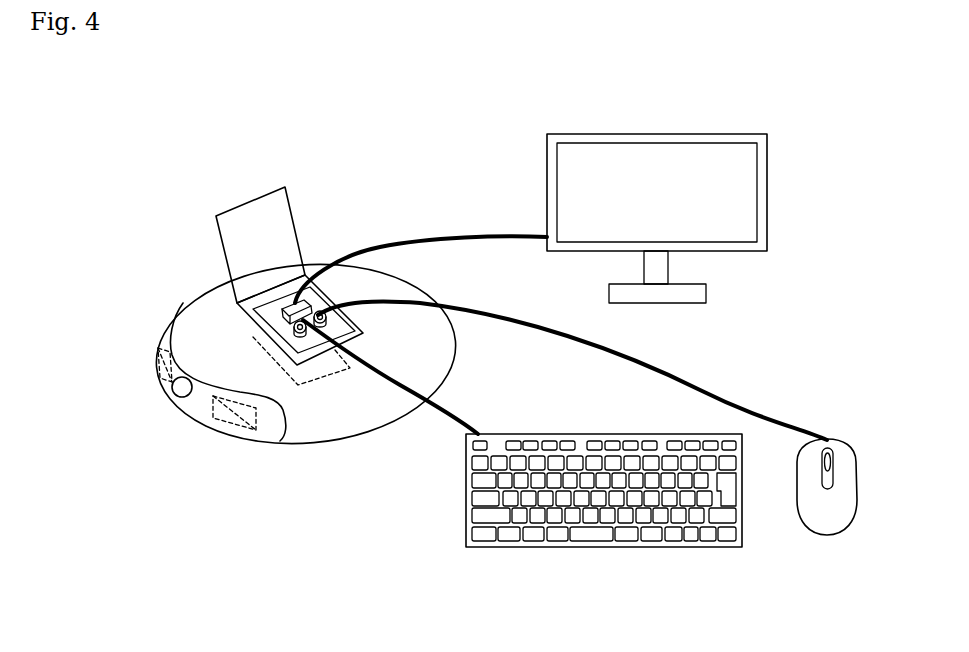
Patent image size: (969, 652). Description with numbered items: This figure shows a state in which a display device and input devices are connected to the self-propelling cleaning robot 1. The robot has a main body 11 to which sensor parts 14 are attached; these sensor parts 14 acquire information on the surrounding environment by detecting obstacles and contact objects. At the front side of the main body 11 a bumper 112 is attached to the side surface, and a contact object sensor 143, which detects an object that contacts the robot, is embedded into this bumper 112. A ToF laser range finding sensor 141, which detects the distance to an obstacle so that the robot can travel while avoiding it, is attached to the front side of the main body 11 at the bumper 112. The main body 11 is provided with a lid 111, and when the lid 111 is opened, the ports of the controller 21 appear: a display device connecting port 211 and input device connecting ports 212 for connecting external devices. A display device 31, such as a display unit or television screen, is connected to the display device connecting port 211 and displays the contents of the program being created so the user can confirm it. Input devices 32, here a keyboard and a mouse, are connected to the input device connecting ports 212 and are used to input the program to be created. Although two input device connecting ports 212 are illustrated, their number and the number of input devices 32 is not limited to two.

The self-propelling cleaning robot 1 is at (340, 216).
The main body 11 is at (210, 307).
The lid 111 is at (240, 220).
The bumper 112 is at (258, 436).
The sensor part 14 is at (147, 447).
The ToF laser range finding sensor 141 is at (174, 396).
The contact object sensor 143 is at (155, 373).
The controller 21 is at (246, 387).
The display device connecting port 211 is at (258, 326).
The input device connecting port 212 is at (300, 334).
The display device 31 is at (713, 132).
The input device 32 is at (572, 547).